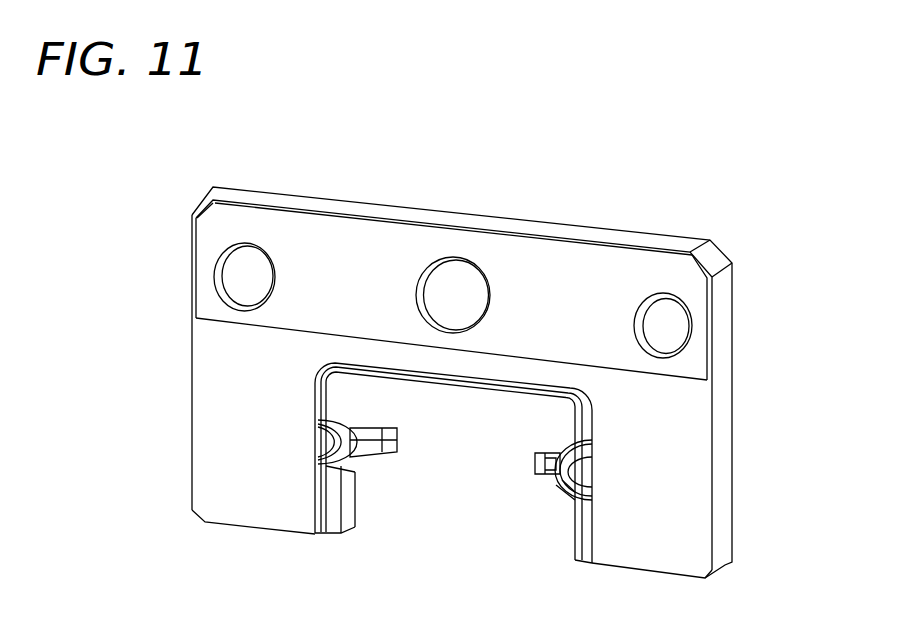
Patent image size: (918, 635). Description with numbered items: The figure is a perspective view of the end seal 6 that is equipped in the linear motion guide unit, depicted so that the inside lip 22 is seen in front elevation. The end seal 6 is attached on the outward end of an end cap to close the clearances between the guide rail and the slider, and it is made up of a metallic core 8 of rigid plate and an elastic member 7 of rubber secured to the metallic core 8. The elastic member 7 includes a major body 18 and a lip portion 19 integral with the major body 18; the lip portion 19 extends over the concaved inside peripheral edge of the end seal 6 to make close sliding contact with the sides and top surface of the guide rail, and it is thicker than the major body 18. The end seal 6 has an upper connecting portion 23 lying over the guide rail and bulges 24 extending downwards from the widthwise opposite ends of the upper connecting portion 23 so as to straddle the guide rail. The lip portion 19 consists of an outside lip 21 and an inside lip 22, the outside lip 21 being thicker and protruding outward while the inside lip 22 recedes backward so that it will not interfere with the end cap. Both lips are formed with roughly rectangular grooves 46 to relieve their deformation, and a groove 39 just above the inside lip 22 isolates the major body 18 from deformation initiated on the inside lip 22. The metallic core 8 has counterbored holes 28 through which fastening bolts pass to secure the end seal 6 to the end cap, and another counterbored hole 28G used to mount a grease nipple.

The end seal 6 is at (553, 215).
The elastic member 7 is at (220, 376).
The metallic core 8 is at (313, 238).
The major body 18 is at (372, 253).
The lip portion 19 is at (503, 393).
The outside lip 21 is at (372, 409).
The inside lip 22 is at (478, 386).
The upper connecting portion 23 is at (578, 272).
The bulges 24 is at (220, 423).
The holes 28 is at (233, 268).
The hole for grease nipple 28G is at (452, 278).
The groove 39 is at (322, 528).
The grooves 46 is at (367, 458).